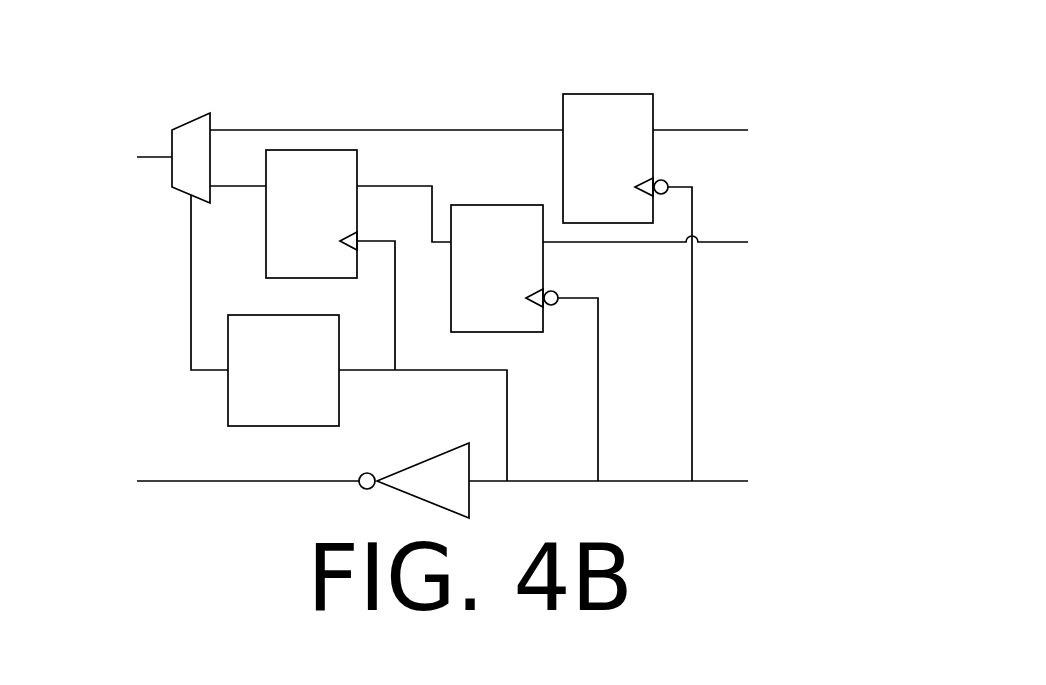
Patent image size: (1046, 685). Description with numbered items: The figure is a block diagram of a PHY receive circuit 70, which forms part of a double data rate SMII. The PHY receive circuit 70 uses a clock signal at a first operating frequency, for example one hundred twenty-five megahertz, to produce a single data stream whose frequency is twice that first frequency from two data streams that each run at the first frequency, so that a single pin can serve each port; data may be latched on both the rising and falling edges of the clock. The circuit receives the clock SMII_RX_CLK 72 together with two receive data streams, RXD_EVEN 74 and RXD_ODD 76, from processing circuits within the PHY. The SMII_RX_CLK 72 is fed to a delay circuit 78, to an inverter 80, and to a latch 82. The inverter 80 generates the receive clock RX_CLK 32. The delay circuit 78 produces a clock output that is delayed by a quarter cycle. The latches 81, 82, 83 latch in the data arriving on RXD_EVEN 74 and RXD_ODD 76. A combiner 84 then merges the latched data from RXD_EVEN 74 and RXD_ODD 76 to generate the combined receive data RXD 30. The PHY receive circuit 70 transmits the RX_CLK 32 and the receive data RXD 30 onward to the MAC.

The RXD 30 is at (91, 116).
The RX_CLK 32 is at (62, 439).
The PHY receive circuit 70 is at (414, 72).
The SMII_RX_CLK 72 is at (784, 441).
The RXD_EVEN 74 is at (786, 90).
The RXD_ODD 76 is at (793, 247).
The delay circuit 78 is at (285, 426).
The inverter 80 is at (395, 470).
The latch 81 is at (608, 94).
The latch 82 is at (266, 224).
The latch 83 is at (499, 205).
The combiner 84 is at (192, 118).